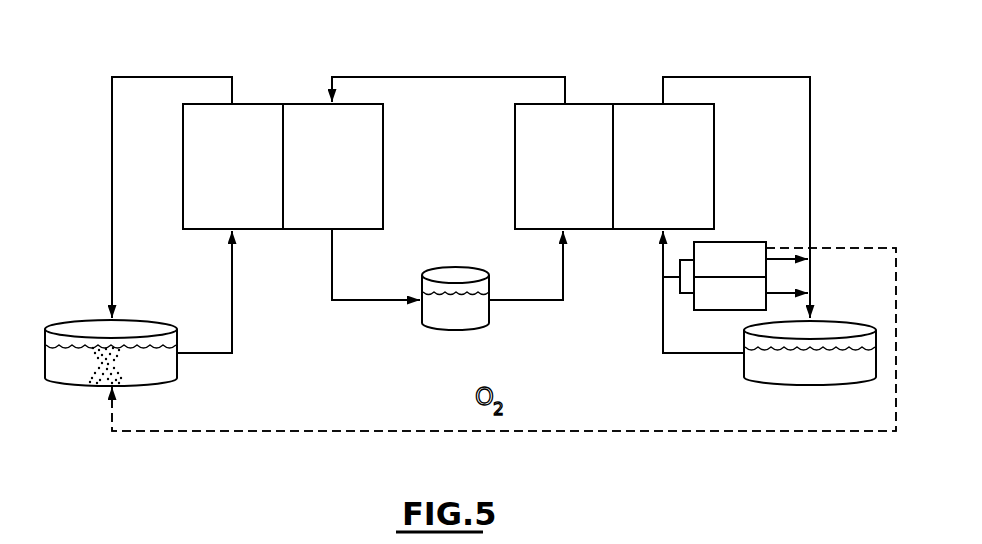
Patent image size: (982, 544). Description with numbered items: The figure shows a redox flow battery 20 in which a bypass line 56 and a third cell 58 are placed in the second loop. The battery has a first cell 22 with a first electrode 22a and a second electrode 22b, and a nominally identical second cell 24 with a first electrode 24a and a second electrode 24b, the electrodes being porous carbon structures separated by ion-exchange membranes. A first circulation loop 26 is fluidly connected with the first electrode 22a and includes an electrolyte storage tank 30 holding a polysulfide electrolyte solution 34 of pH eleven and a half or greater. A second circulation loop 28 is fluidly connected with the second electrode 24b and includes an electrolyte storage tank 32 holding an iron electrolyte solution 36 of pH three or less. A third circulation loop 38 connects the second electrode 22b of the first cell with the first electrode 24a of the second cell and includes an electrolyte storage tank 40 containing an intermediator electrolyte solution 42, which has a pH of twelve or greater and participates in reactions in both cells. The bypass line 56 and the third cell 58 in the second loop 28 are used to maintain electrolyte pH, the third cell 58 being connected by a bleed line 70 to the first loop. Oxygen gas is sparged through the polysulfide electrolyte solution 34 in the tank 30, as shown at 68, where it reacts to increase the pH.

The redox flow battery 20 is at (323, 440).
The first cell 22 is at (302, 232).
The first electrode 22a is at (211, 216).
The second electrode 22b is at (367, 182).
The second cell 24 is at (630, 232).
The first electrode 24a is at (530, 192).
The second electrode 24b is at (697, 170).
The first circulation loop 26 is at (110, 225).
The second circulation loop 28 is at (814, 190).
The electrolyte storage tank 30 is at (178, 363).
The electrolyte storage tank 32 is at (741, 364).
The polysulfide electrolyte solution 34 is at (70, 372).
The iron electrolyte solution 36 is at (772, 364).
The third circulation loop 38 is at (450, 74).
The electrolyte storage tank 40 is at (492, 317).
The intermediator electrolyte solution 42 is at (453, 318).
The bypass line 56 is at (687, 295).
The third cell 58 is at (735, 315).
The oxygen sparging 68 is at (134, 366).
The bleed line 70 is at (495, 432).